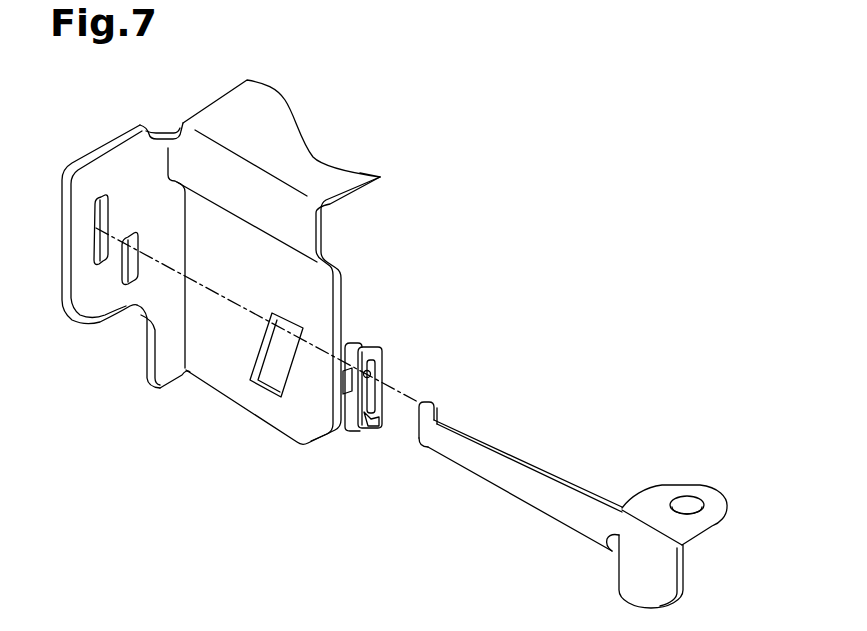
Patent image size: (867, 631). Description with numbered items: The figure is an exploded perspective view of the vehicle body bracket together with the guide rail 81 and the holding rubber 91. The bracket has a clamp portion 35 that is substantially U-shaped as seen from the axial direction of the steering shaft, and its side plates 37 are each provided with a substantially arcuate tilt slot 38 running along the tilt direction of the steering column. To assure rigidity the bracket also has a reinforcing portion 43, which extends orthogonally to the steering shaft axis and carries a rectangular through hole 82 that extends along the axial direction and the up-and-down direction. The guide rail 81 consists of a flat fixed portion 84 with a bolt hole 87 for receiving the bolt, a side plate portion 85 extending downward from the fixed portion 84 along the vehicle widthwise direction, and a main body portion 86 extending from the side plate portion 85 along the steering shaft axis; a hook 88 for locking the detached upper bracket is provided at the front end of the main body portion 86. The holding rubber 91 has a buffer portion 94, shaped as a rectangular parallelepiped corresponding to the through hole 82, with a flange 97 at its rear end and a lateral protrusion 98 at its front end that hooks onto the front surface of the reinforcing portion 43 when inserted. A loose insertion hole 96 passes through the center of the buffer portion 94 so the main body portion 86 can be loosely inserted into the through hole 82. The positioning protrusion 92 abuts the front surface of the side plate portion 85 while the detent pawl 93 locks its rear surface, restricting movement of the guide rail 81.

The clamp portion 35 is at (217, 101).
The side plates 37 is at (218, 372).
The tilt slots 38 is at (270, 347).
The reinforcing portion 43 is at (76, 202).
The guide rail 81 is at (726, 449).
The through hole 82 is at (93, 252).
The fixed portion 84 is at (673, 485).
The side plate portion 85 is at (608, 538).
The main body portion 86 is at (513, 470).
The bolt hole 87 is at (693, 513).
The hook 88 is at (435, 408).
The holding rubber 91 is at (416, 329).
The positioning protrusion 92 is at (372, 368).
The detent pawl 93 is at (375, 432).
The buffer portion 94 is at (355, 345).
The loose insertion hole 96 is at (377, 380).
The flange 97 is at (378, 343).
The protrusion 98 is at (340, 403).